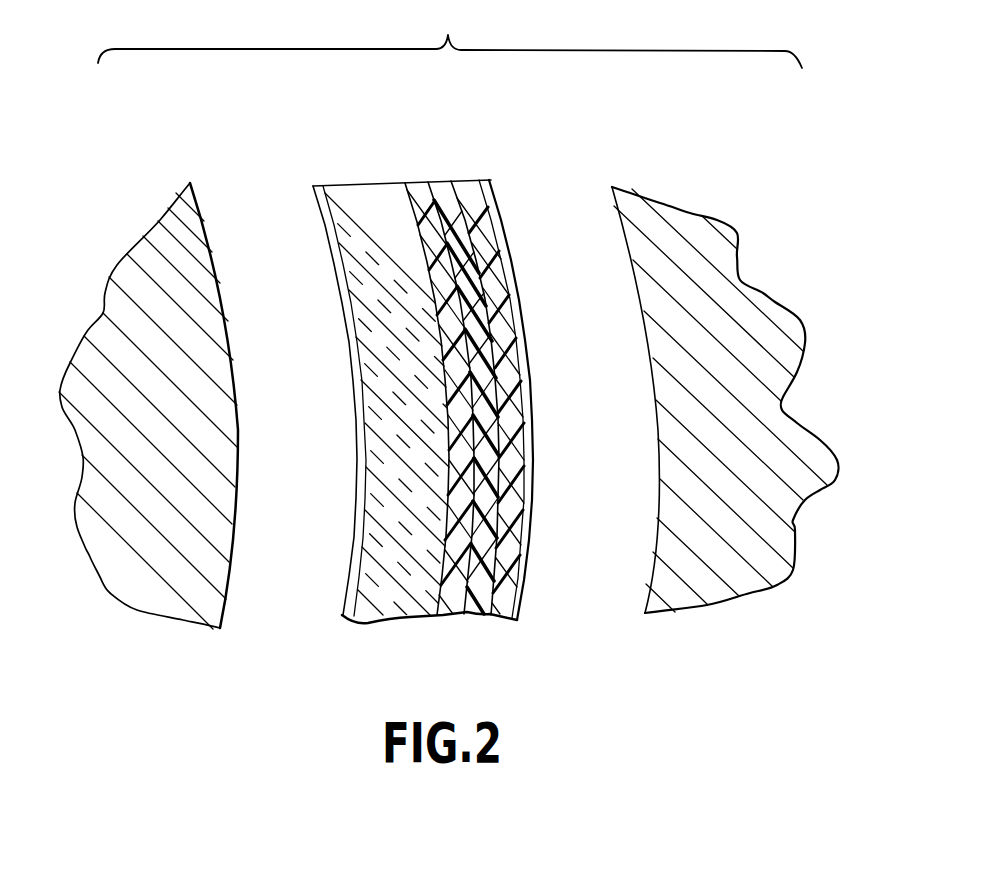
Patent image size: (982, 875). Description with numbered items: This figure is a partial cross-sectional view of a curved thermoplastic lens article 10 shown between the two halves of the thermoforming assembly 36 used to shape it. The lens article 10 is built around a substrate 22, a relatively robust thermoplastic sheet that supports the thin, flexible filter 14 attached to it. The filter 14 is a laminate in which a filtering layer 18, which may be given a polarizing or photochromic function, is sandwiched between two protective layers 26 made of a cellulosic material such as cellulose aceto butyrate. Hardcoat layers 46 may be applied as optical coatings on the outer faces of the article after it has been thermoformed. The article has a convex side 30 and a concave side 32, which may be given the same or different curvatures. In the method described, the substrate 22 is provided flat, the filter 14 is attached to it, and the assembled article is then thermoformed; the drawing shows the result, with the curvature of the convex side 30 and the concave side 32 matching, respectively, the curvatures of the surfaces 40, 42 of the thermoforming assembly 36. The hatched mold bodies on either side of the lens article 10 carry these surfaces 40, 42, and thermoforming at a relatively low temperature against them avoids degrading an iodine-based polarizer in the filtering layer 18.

The lens article 10 is at (320, 180).
The filter 14 is at (397, 175).
The filtering layer 18 is at (470, 615).
The substrate 22 is at (353, 198).
The protective layers 26 is at (438, 613).
The convex side 30 is at (539, 287).
The concave side 32 is at (306, 294).
The thermoforming assembly 36 is at (226, 646).
The surface of the thermoforming assembly 40 is at (657, 425).
The surface of the thermoforming assembly 42 is at (243, 434).
The hardcoat layers 46 is at (345, 617).